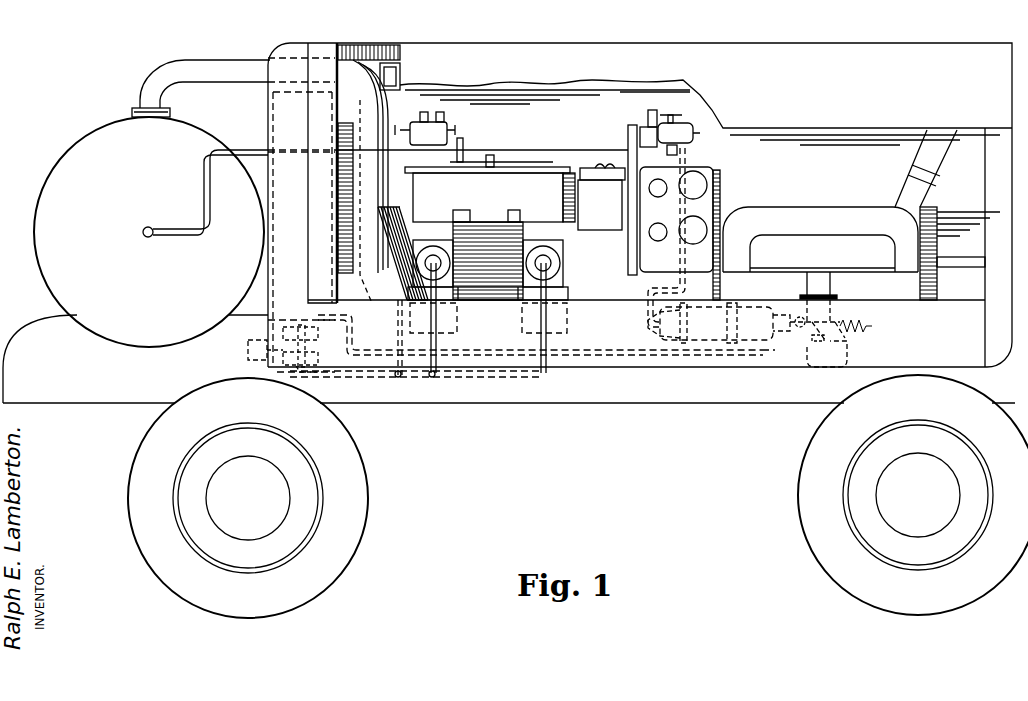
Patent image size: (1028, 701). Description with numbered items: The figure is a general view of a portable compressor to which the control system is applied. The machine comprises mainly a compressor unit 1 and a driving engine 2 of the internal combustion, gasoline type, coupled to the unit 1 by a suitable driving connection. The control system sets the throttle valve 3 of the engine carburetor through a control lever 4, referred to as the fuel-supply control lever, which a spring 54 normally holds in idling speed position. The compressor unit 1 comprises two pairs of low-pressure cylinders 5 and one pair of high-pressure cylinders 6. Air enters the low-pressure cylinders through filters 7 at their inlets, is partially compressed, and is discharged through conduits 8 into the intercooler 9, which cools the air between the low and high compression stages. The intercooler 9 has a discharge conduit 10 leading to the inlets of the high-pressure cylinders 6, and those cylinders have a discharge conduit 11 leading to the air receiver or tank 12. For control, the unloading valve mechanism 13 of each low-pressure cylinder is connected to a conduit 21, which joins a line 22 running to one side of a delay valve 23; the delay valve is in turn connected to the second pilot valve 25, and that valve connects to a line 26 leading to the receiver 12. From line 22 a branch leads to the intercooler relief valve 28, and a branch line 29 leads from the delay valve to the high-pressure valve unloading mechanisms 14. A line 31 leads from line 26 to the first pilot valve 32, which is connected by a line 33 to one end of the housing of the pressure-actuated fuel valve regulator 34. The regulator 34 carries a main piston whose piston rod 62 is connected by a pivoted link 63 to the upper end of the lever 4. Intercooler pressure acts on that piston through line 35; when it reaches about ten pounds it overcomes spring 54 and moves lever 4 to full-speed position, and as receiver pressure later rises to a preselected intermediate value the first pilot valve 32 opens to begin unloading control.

The compressor unit 1 is at (509, 220).
The driving engine 2 is at (770, 206).
The throttle valve 3 is at (812, 337).
The control lever 4 is at (835, 341).
The low-pressure cylinders 5 is at (563, 283).
The high-pressure cylinders 6 is at (556, 186).
The filters 7 is at (607, 209).
The conduits 8 is at (352, 176).
The intercooler 9 is at (313, 342).
The discharge conduit 10 is at (395, 215).
The discharge conduit 11 is at (256, 67).
The air receiver 12 is at (159, 168).
The unloading valve mechanism 13 is at (548, 263).
The valve unloading mechanisms 14 is at (544, 167).
The conduit 21 is at (510, 376).
The line 22 is at (398, 342).
The delay valve 23 is at (463, 155).
The pilot valve 25 is at (437, 134).
The line 26 is at (210, 205).
The intercooler relief valve 28 is at (292, 368).
The branch line 29 is at (490, 160).
The line 31 is at (598, 150).
The pilot valve 32 is at (686, 140).
The line 33 is at (683, 290).
The fuel valve regulator 34 is at (716, 318).
The line 35 is at (700, 355).
The spring 54 is at (855, 323).
The piston rod 62 is at (787, 312).
The pivoted link 63 is at (818, 285).